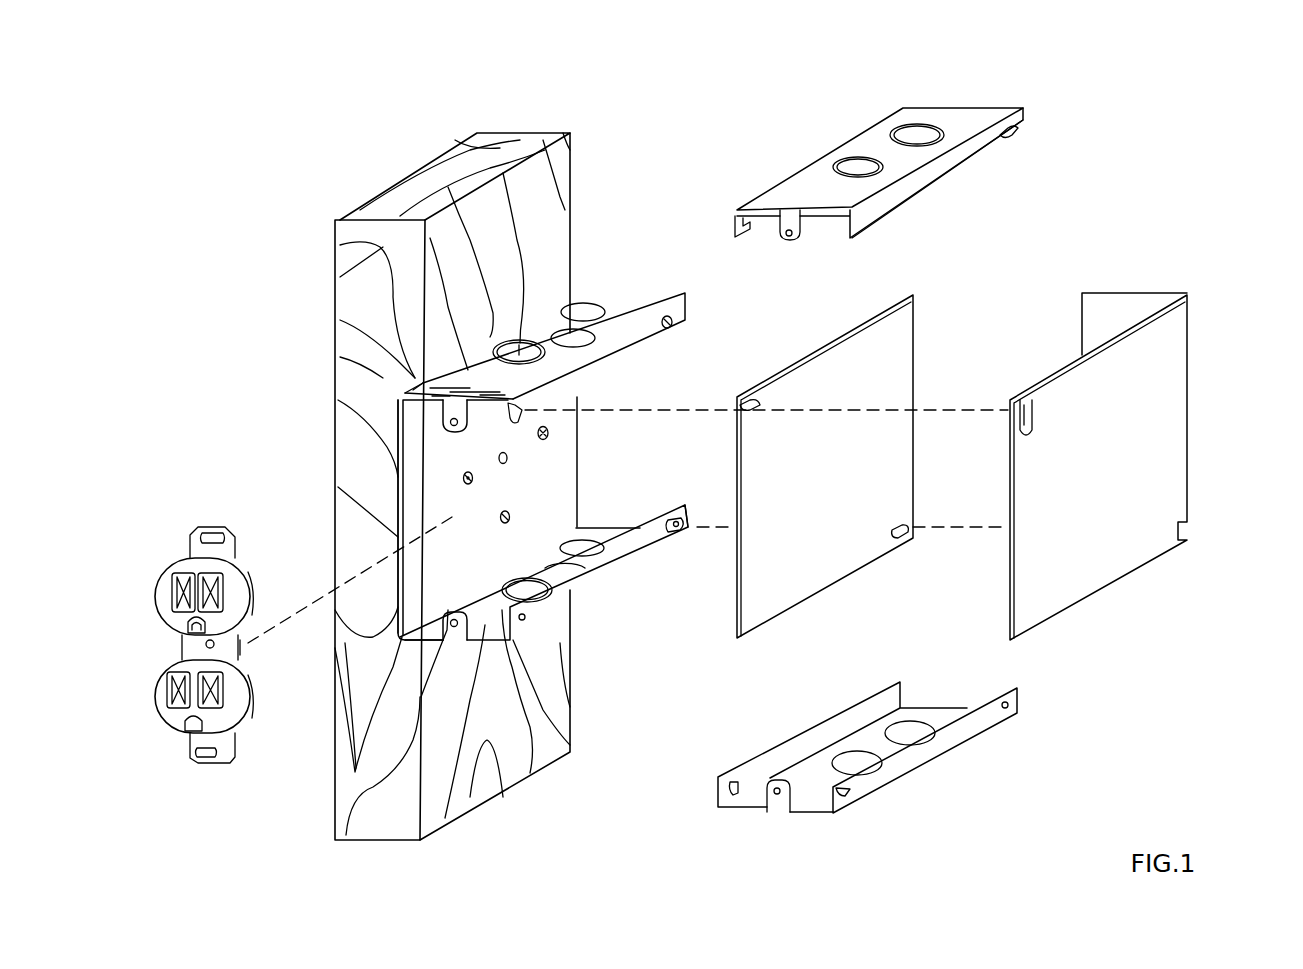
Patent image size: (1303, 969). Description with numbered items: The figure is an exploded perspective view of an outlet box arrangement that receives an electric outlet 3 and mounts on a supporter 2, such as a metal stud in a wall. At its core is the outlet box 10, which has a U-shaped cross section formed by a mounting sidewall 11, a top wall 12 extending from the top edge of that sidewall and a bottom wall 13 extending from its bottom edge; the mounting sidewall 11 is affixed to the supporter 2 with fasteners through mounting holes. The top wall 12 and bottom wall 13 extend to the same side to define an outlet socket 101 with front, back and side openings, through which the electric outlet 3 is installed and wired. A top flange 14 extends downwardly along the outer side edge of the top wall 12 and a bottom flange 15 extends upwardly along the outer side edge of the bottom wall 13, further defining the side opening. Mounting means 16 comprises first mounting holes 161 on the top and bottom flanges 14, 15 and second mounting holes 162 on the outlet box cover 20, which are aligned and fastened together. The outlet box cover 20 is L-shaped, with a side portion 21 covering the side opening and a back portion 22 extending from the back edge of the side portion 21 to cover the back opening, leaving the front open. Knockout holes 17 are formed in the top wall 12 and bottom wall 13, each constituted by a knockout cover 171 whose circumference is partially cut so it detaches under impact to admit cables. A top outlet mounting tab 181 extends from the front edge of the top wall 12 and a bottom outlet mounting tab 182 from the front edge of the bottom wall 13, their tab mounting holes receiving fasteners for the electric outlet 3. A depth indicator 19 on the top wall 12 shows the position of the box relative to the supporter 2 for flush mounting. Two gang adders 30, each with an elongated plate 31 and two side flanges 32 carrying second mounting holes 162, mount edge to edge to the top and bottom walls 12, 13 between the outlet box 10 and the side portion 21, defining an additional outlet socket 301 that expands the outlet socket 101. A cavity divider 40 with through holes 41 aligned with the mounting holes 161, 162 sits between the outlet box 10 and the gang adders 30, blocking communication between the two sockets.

The outlet box 10 is at (228, 228).
The supporter 2 is at (495, 232).
The electric outlet 3 is at (180, 572).
The mounting sidewall 11 is at (535, 501).
The top wall 12 is at (420, 385).
The bottom wall 13 is at (488, 627).
The top flange 14 is at (612, 358).
The bottom flange 15 is at (605, 565).
The mounting means 16 is at (703, 607).
The knockout hole 17 is at (542, 343).
The depth indicator 19 is at (415, 380).
The outlet box cover 20 is at (1148, 411).
The side portion 21 is at (1094, 484).
The back portion 22 is at (1132, 310).
The gang adder 30 is at (932, 454).
The elongated plate 31 is at (975, 108).
The side flange 32 is at (760, 222).
The cavity divider 40 is at (851, 466).
The through hole 41 is at (750, 405).
The outlet socket 101 is at (455, 500).
The first mounting hole 161 is at (675, 322).
The second mounting hole 162 is at (733, 227).
The knockout cover 171 is at (520, 350).
The top outlet mounting tab 181 is at (445, 407).
The bottom outlet mounting tab 182 is at (440, 635).
The additional outlet socket 301 is at (990, 765).